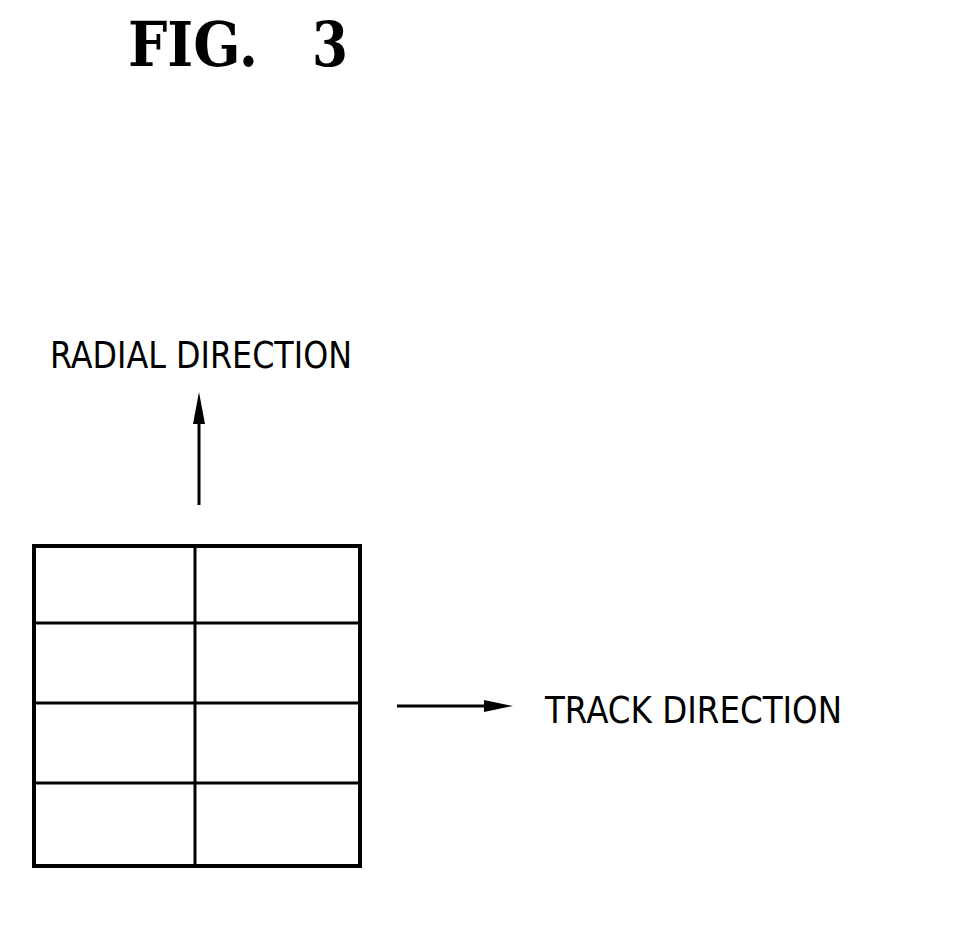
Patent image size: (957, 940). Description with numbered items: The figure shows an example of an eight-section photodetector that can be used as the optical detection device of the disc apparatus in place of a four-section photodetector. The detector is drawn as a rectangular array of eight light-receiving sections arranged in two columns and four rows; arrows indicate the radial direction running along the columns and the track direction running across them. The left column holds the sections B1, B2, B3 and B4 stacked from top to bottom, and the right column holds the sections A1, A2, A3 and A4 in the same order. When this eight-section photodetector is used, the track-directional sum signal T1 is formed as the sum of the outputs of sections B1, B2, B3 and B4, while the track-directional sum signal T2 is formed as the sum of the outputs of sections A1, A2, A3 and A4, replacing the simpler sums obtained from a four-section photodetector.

The photodetector section B1 is at (114, 584).
The photodetector section A1 is at (277, 584).
The photodetector section B2 is at (114, 663).
The photodetector section A2 is at (277, 663).
The photodetector section B3 is at (114, 743).
The photodetector section A3 is at (277, 743).
The photodetector section B4 is at (114, 824).
The photodetector section A4 is at (277, 824).